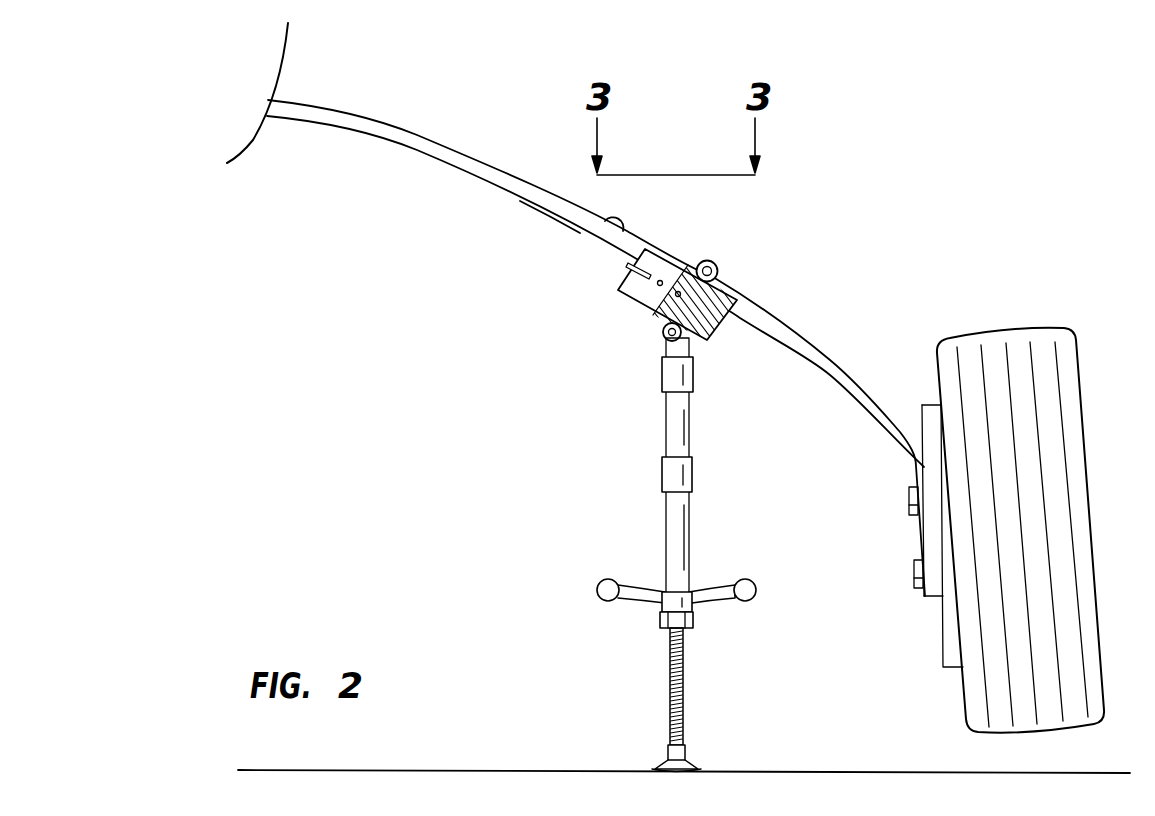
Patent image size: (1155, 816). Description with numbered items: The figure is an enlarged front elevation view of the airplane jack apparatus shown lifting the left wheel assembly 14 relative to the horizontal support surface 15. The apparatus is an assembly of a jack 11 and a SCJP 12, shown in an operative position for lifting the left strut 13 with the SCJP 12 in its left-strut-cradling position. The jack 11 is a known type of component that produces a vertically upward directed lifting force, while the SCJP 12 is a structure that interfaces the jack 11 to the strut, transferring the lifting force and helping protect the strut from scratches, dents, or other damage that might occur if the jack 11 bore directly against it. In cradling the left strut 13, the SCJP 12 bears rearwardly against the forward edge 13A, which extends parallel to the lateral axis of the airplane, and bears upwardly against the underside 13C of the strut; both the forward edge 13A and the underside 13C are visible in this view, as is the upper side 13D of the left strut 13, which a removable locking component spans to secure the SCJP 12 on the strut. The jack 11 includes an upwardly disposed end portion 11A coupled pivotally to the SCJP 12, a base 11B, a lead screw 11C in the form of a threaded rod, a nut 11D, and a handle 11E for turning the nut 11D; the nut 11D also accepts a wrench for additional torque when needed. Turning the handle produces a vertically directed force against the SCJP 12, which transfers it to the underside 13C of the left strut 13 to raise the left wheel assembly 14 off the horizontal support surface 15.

The jack 11 is at (706, 519).
The upwardly disposed end portion 11A is at (710, 380).
The base 11B is at (667, 752).
The lead screw 11C is at (685, 697).
The nut 11D is at (694, 620).
The handle 11E is at (606, 580).
The SCJP 12 is at (730, 262).
The left strut 13 is at (418, 122).
The forward edge 13A is at (500, 180).
The underside 13C is at (550, 216).
The upper side 13D is at (608, 219).
The left wheel assembly 14 is at (931, 664).
The horizontal support surface 15 is at (483, 770).